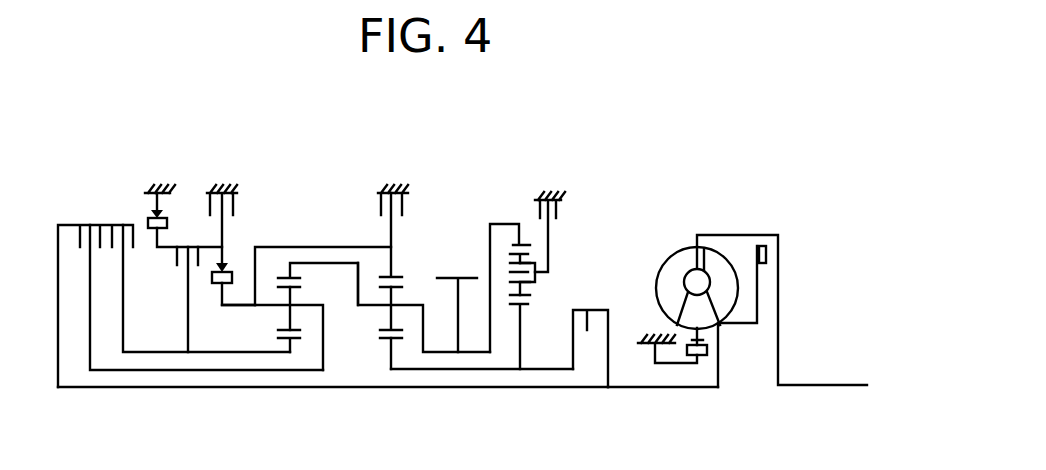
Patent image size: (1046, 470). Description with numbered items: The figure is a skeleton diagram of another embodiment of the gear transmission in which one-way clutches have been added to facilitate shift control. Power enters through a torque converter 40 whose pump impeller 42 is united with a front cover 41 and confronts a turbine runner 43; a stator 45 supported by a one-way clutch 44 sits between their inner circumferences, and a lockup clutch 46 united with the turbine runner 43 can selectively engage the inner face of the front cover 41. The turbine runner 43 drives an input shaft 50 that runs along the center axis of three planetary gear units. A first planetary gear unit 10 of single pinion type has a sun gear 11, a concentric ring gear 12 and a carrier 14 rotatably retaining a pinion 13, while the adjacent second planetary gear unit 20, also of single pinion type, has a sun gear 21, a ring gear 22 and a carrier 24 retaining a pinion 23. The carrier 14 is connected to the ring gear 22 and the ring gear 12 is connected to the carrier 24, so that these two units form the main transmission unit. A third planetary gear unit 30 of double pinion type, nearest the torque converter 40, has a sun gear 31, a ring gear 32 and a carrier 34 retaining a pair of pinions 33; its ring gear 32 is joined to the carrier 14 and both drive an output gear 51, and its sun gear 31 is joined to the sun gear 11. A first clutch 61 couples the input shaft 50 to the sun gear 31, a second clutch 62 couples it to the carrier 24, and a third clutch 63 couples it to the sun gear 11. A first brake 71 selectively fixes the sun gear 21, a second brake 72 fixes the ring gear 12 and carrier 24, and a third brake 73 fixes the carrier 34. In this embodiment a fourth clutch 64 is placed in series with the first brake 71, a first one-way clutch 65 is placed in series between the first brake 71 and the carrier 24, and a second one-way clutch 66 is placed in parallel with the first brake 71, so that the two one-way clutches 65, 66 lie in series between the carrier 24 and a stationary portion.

The first planetary gear unit 10 is at (397, 382).
The sun gear 11 is at (388, 340).
The ring gear 12 is at (385, 275).
The pinion 13 is at (385, 330).
The carrier 14 is at (403, 310).
The second planetary gear unit 20 is at (266, 365).
The sun gear 21 is at (290, 340).
The ring gear 22 is at (297, 277).
The pinion 23 is at (283, 330).
The carrier 24 is at (307, 340).
The third planetary gear unit 30 is at (529, 383).
The sun gear 31 is at (525, 303).
The ring gear 32 is at (515, 243).
The pinions 33 is at (515, 278).
The carrier 34 is at (540, 278).
The torque converter 40 is at (733, 209).
The front cover 41 is at (778, 303).
The pump impeller 42 is at (675, 257).
The turbine runner 43 is at (728, 295).
The one-way clutch 44 is at (705, 360).
The stator 45 is at (703, 313).
The lockup clutch 46 is at (766, 250).
The input shaft 50 is at (595, 388).
The output gear 51 is at (457, 278).
The first clutch 61 is at (587, 317).
The second clutch 62 is at (90, 225).
The third clutch 63 is at (122, 222).
The fourth clutch 64 is at (177, 257).
The first one-way clutch 65 is at (230, 263).
The second one-way clutch 66 is at (147, 215).
The first brake 71 is at (222, 192).
The second brake 72 is at (391, 192).
The third brake 73 is at (563, 200).